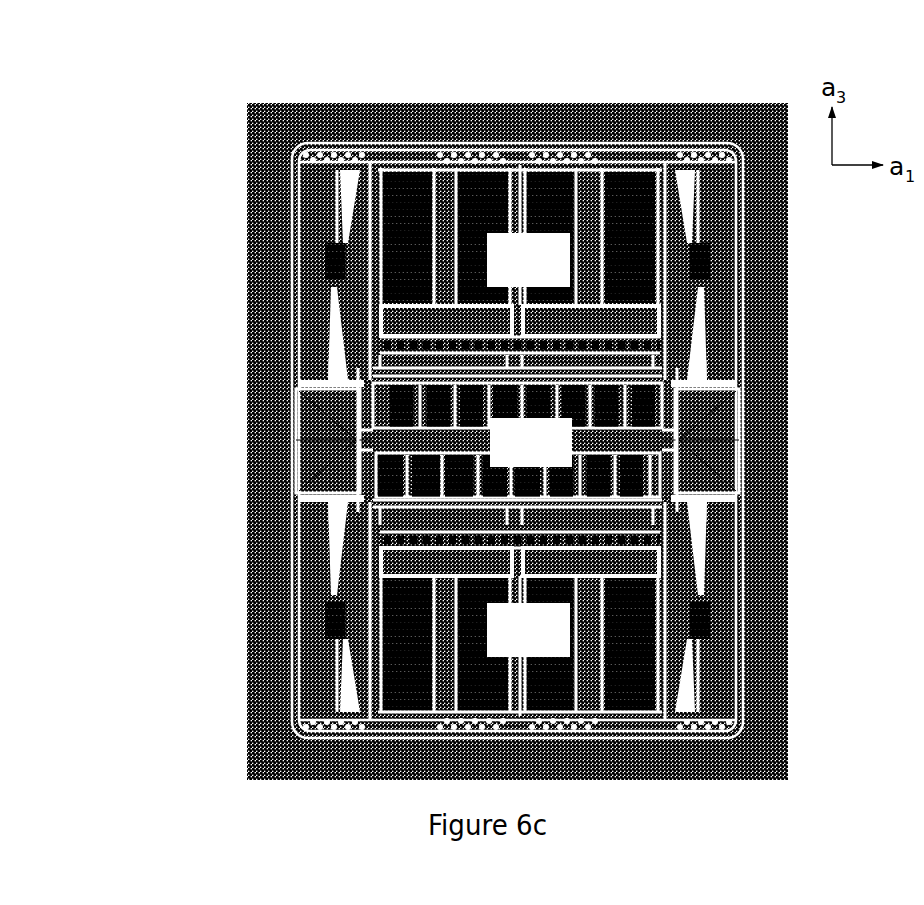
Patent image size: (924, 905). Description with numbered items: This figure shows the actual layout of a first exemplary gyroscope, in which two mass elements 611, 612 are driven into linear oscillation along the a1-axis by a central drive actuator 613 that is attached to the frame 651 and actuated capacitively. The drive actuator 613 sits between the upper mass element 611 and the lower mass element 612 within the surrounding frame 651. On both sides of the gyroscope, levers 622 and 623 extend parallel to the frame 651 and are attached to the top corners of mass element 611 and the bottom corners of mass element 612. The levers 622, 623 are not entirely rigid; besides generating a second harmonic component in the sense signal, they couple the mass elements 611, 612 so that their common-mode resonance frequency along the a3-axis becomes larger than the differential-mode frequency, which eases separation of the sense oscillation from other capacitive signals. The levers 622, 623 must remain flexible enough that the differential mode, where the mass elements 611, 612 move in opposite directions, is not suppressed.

The frame 651 is at (352, 124).
The mass element 611 is at (520, 259).
The mass element 612 is at (520, 624).
The drive actuator 613 is at (517, 440).
The lever 622 is at (292, 505).
The lever 623 is at (744, 505).